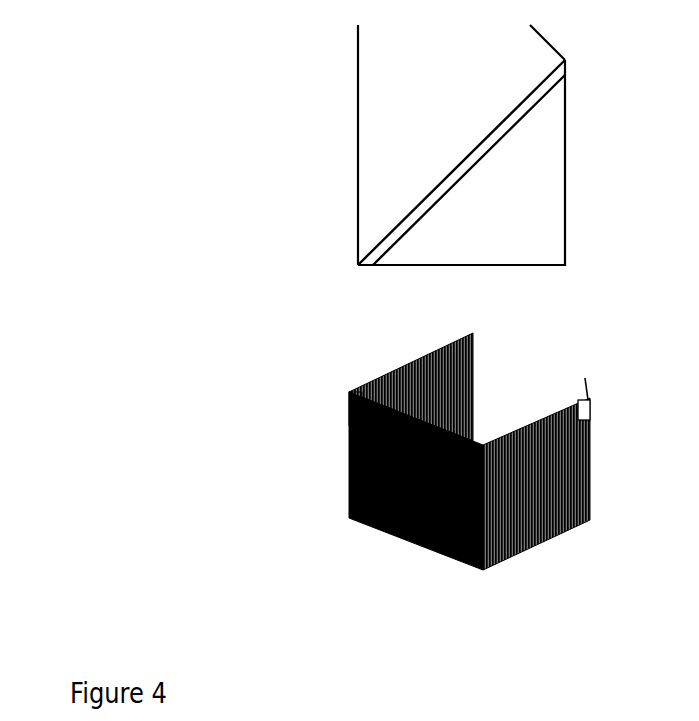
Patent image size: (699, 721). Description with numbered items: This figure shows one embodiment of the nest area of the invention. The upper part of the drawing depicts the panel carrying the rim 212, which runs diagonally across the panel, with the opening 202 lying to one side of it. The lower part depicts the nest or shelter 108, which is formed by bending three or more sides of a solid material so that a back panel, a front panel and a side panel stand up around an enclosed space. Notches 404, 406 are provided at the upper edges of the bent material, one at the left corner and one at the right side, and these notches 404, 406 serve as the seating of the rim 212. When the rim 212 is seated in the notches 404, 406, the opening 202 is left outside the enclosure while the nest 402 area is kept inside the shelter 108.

The nest area 402 is at (403, 84).
The opening 202 is at (525, 194).
The rim 212 is at (388, 227).
The notch 404 is at (356, 378).
The nest or shelter 108 is at (338, 428).
The notch 406 is at (585, 394).